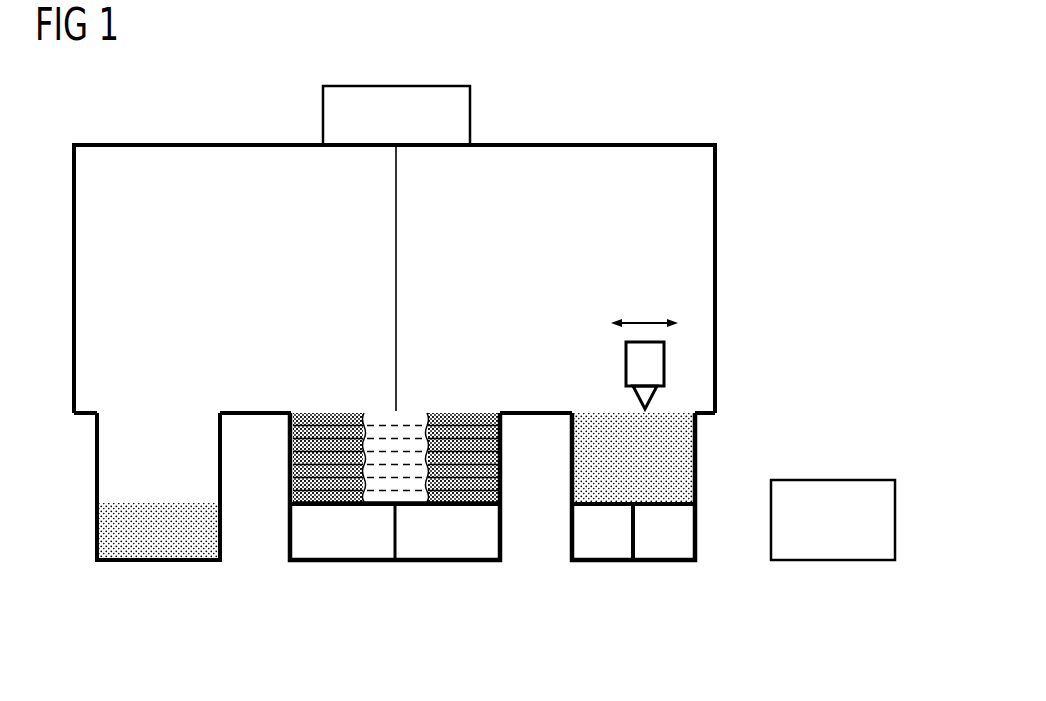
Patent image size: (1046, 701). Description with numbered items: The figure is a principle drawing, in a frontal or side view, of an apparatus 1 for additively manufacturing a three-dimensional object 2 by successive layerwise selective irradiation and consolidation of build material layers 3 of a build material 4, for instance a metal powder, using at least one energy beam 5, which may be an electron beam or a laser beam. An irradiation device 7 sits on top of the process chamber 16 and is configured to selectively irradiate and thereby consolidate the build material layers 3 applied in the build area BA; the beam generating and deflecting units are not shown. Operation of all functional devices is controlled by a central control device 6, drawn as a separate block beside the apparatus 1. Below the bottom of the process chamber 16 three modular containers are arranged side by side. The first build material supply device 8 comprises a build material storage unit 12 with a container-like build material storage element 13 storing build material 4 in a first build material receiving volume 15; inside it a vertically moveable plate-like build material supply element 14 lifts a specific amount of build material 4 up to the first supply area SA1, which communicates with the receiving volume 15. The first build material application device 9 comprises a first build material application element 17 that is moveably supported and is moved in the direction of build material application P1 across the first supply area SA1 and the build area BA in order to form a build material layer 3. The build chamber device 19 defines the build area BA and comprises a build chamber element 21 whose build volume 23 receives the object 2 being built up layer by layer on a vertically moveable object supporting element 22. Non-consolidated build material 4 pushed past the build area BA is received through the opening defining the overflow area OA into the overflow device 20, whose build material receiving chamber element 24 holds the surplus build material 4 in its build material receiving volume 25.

The apparatus 1 is at (212, 119).
The three-dimensional object 2 is at (424, 446).
The build material layer 3 is at (383, 486).
The build material 4 is at (112, 510).
The energy beam 5 is at (397, 232).
The control device 6 is at (836, 562).
The irradiation device 7 is at (503, 92).
The first build material supply device 8 is at (682, 583).
The first build material application device 9 is at (687, 329).
The build material storage unit 12 is at (612, 536).
The build material storage element 13 is at (570, 483).
The build material supply element 14 is at (662, 508).
The first build material receiving volume 15 is at (682, 483).
The process chamber 16 is at (717, 189).
The first build material application element 17 is at (664, 376).
The build chamber device 19 is at (396, 536).
The overflow device 20 is at (126, 537).
The build chamber element 21 is at (338, 563).
The object supporting element 22 is at (448, 508).
The build volume 23 is at (291, 502).
The build material receiving chamber element 24 is at (95, 530).
The build material receiving volume 25 is at (106, 481).
The overflow area OA is at (206, 401).
The build area BA is at (449, 401).
The first supply area SA1 is at (566, 401).
The direction of build material application P1 is at (641, 318).